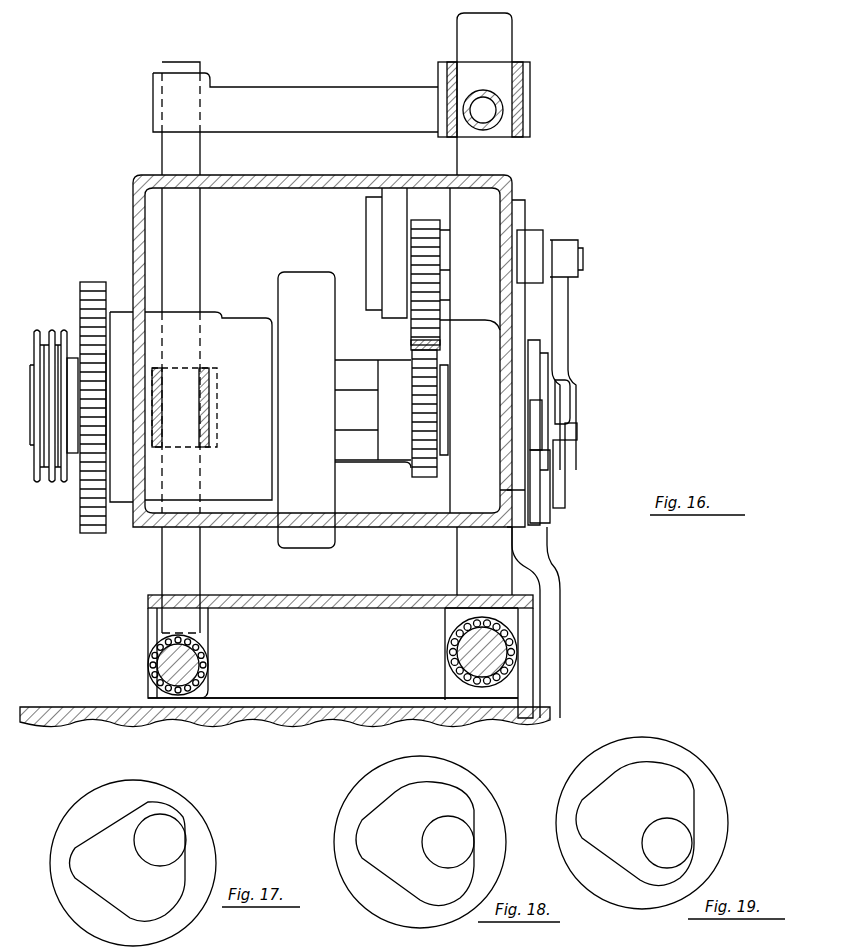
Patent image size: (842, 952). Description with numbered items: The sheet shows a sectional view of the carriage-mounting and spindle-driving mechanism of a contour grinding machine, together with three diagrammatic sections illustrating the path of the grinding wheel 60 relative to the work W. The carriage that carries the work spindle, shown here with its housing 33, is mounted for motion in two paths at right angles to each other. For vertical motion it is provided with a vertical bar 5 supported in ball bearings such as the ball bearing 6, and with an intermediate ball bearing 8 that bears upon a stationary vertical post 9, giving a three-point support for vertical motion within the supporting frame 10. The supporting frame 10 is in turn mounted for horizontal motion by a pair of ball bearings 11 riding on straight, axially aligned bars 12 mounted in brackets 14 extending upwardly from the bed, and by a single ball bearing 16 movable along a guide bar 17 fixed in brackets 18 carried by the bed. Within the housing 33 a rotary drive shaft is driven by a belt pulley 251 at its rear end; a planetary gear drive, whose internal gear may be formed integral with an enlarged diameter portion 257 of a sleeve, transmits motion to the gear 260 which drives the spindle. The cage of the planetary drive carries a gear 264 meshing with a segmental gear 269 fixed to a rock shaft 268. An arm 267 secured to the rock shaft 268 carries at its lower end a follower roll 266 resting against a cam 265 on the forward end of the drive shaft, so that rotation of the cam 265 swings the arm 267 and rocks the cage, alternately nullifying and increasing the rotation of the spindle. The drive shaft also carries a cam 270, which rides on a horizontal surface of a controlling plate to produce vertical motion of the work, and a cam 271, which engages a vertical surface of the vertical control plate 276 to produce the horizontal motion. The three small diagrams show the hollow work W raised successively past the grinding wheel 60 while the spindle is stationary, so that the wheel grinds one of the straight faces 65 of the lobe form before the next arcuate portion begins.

In FIG. 16, the vertical bar 5 is at (460, 152).
In FIG. 16, the ball bearing 6 is at (525, 108).
In FIG. 16, the intermediate ball bearing 8 is at (207, 417).
In FIG. 16, the stationary vertical post 9 is at (185, 161).
In FIG. 16, the supporting frame 10 is at (370, 102).
In FIG. 16, the ball bearing 11 is at (448, 640).
In FIG. 16, the bar 12 is at (470, 655).
In FIG. 16, the bracket 14 is at (492, 708).
In FIG. 16, the single ball bearing 16 is at (158, 658).
In FIG. 16, the guide bar 17 is at (165, 675).
In FIG. 16, the bracket 18 is at (200, 705).
In FIG. 16, the housing 33 is at (303, 183).
In FIG. 16, the belt pulley 251 is at (46, 340).
In FIG. 16, the enlarged diameter portion 257 is at (305, 290).
In FIG. 16, the gear 260 is at (90, 290).
In FIG. 16, the gear 264 is at (425, 455).
In FIG. 16, the cam 265 is at (560, 470).
In FIG. 16, the follower roll 266 is at (568, 400).
In FIG. 16, the arm 267 is at (562, 330).
In FIG. 16, the rock shaft 268 is at (584, 260).
In FIG. 16, the segmental gear 269 is at (424, 316).
In FIG. 16, the cam 270 is at (535, 457).
In FIG. 16, the cam 271 is at (577, 441).
In FIG. 16, the vertical control plate 276 is at (542, 510).
In FIG. 17, the work W is at (131, 782).
In FIG. 18, the work W is at (366, 780).
In FIG. 19, the work W is at (675, 748).
In FIG. 17, the grinding wheel 60 is at (172, 835).
In FIG. 18, the grinding wheel 60 is at (462, 835).
In FIG. 19, the grinding wheel 60 is at (678, 850).
In FIG. 17, the straight face 65 is at (186, 862).
In FIG. 18, the straight face 65 is at (474, 858).
In FIG. 19, the straight face 65 is at (695, 812).